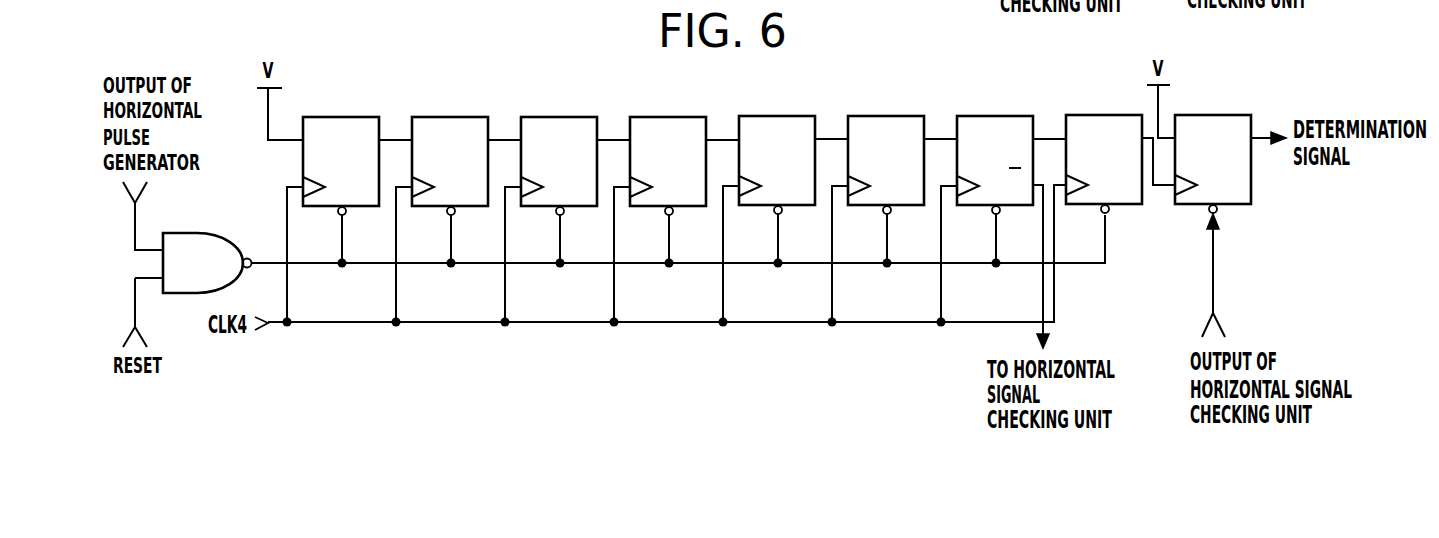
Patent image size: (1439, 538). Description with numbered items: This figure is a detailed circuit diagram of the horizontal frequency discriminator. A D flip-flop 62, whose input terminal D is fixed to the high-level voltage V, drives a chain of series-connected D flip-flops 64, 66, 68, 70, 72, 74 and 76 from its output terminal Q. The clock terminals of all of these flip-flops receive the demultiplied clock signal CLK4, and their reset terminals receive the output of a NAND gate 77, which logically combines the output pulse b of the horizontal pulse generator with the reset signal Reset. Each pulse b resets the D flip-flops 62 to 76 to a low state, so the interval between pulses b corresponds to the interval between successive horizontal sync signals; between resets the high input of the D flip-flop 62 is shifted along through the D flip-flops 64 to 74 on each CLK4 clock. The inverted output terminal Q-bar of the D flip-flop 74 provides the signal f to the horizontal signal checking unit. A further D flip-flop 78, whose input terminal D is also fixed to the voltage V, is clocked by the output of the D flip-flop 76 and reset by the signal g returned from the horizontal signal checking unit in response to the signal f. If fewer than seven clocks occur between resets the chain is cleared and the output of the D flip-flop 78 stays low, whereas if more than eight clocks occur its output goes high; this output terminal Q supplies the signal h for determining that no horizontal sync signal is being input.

The D flip-flop 62 is at (340, 117).
The D flip-flop 64 is at (449, 117).
The D flip-flop 66 is at (558, 117).
The D flip-flop 68 is at (667, 117).
The D flip-flop 70 is at (776, 116).
The D flip-flop 72 is at (885, 116).
The D flip-flop 74 is at (994, 116).
The D flip-flop 76 is at (1087, 115).
The NAND gate 77 is at (200, 232).
The D flip-flop 78 is at (1212, 115).
The pulse b is at (137, 223).
The signal f is at (1038, 330).
The signal g is at (1215, 280).
The signal h is at (1262, 133).